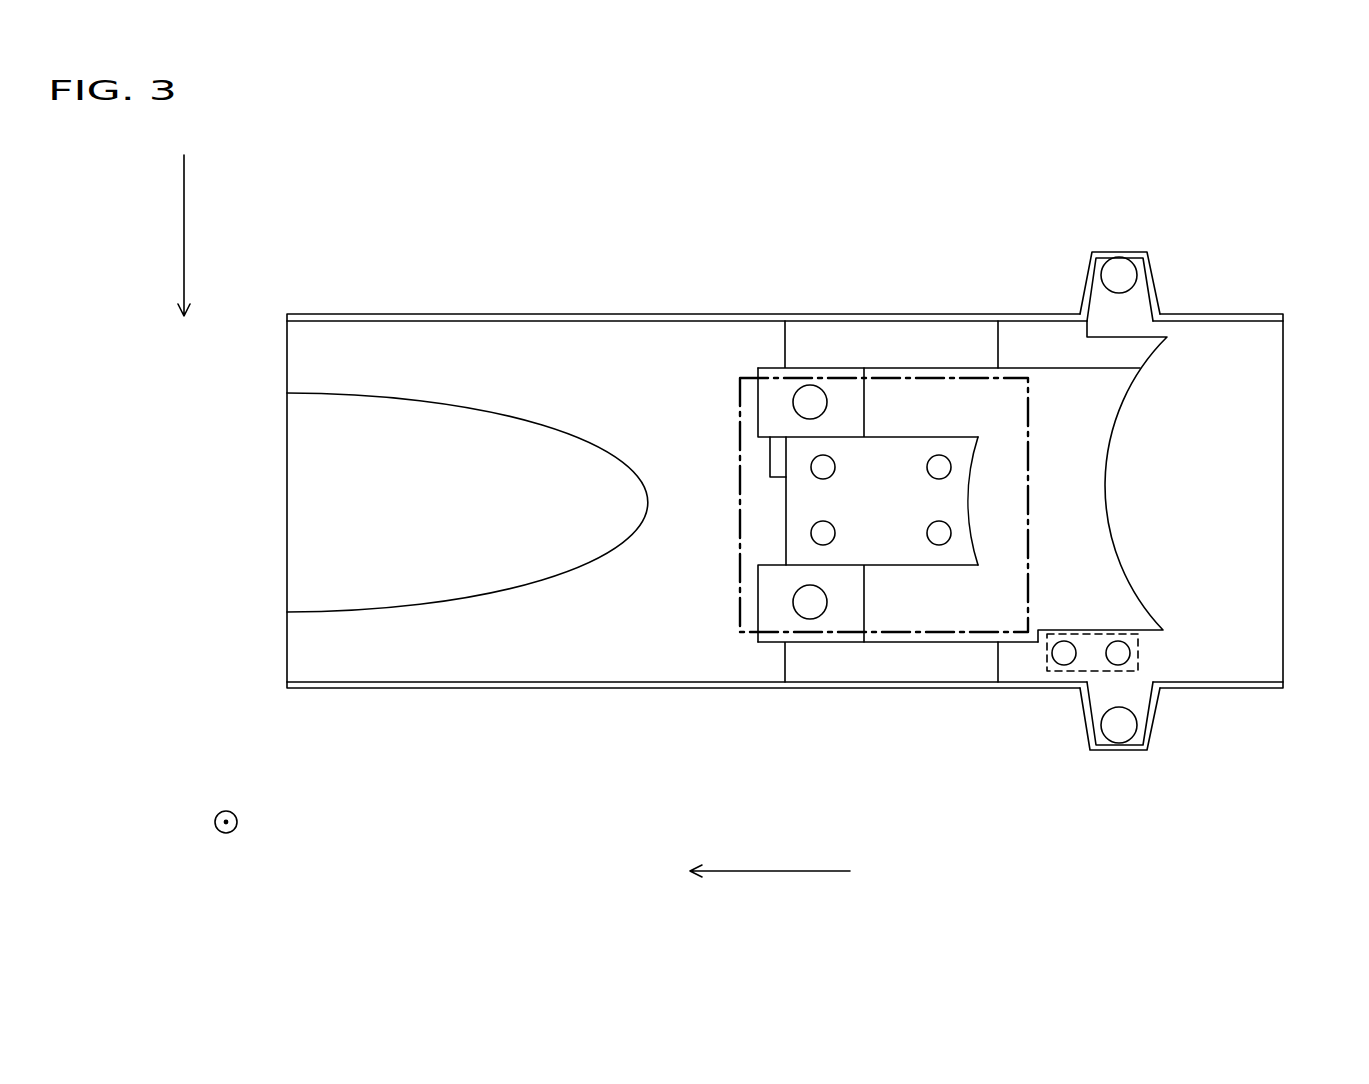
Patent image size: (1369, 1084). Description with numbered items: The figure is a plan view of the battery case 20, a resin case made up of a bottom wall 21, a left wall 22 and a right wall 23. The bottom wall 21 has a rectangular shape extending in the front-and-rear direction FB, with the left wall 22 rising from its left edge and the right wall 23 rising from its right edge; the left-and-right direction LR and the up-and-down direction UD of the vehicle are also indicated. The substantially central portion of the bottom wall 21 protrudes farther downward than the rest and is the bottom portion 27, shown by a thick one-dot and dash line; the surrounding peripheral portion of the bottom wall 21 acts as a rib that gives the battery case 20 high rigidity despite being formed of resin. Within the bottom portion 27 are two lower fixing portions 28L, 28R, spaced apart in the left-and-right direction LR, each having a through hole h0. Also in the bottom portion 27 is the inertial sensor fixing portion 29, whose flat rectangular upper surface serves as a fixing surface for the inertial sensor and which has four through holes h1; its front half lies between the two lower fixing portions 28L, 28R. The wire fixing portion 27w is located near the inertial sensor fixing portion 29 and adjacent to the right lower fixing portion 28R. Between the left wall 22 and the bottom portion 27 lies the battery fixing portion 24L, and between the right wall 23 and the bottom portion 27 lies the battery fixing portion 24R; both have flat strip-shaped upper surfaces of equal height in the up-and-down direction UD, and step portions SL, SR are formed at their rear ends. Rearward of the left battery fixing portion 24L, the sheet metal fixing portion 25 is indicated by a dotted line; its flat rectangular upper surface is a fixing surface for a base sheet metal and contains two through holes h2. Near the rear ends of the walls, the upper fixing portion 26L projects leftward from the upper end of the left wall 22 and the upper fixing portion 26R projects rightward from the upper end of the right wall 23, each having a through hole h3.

The battery case 20 is at (1229, 211).
The bottom wall 21 is at (306, 483).
The left wall 22 is at (467, 688).
The right wall 23 is at (467, 314).
The battery fixing portion 24R is at (853, 343).
The battery fixing portion 24L is at (853, 662).
The sheet metal fixing portion 25 is at (1143, 652).
The upper fixing portion 26R is at (1103, 305).
The upper fixing portion 26L is at (1100, 695).
The bottom portion 27 is at (735, 462).
The wire fixing portion 27w is at (770, 467).
The lower fixing portion 28R is at (777, 397).
The lower fixing portion 28L is at (776, 612).
The inertial sensor fixing portion 29 is at (805, 498).
The step portion SR is at (988, 330).
The step portion SL is at (989, 678).
The through hole h0 is at (818, 406).
The through hole h1 is at (830, 466).
The through hole h2 is at (1064, 650).
The through hole h3 is at (1119, 270).
The left-and-right direction LR is at (186, 258).
The up-and-down direction UD is at (238, 826).
The front-and-rear direction FB is at (738, 872).